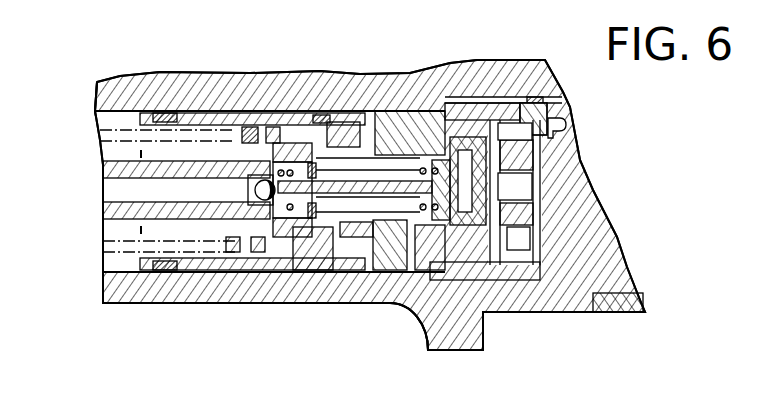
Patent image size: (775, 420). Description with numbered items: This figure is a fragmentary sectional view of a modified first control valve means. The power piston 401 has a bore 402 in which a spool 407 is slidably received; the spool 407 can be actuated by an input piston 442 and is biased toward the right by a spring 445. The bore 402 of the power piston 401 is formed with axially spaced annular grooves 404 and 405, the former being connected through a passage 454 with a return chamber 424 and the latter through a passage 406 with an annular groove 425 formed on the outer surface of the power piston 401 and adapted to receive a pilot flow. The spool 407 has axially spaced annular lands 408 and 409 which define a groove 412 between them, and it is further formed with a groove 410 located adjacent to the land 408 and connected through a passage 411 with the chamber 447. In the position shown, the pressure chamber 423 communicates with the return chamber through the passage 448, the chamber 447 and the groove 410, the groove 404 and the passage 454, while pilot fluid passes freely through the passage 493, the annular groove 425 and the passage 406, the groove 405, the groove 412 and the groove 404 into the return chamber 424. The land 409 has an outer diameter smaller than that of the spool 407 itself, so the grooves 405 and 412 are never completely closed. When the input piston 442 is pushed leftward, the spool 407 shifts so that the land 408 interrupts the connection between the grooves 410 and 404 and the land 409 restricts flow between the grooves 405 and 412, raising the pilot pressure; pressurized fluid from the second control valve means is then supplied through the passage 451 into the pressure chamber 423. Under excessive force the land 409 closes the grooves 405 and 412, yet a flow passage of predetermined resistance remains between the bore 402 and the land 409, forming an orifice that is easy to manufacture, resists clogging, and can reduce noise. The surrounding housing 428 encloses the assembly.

The power piston 401 is at (302, 243).
The bore 402 is at (327, 227).
The annular groove 404 is at (418, 303).
The annular groove 405 is at (518, 268).
The passage 406 is at (483, 93).
The spool 407 is at (508, 213).
The land 408 is at (405, 111).
The land 409 is at (446, 128).
The groove 410 is at (388, 222).
The passage 411 is at (343, 222).
The groove 412 is at (392, 245).
The pressure chamber 423 is at (510, 268).
The return chamber 424 is at (140, 232).
The annular groove 425 is at (232, 270).
The housing 428 is at (105, 210).
The input piston 442 is at (590, 172).
The spring 445 is at (350, 122).
The chamber 447 is at (340, 158).
The passage 448 is at (510, 175).
The passage 451 is at (481, 95).
The passage 454 is at (313, 145).
The passage 493 is at (215, 95).